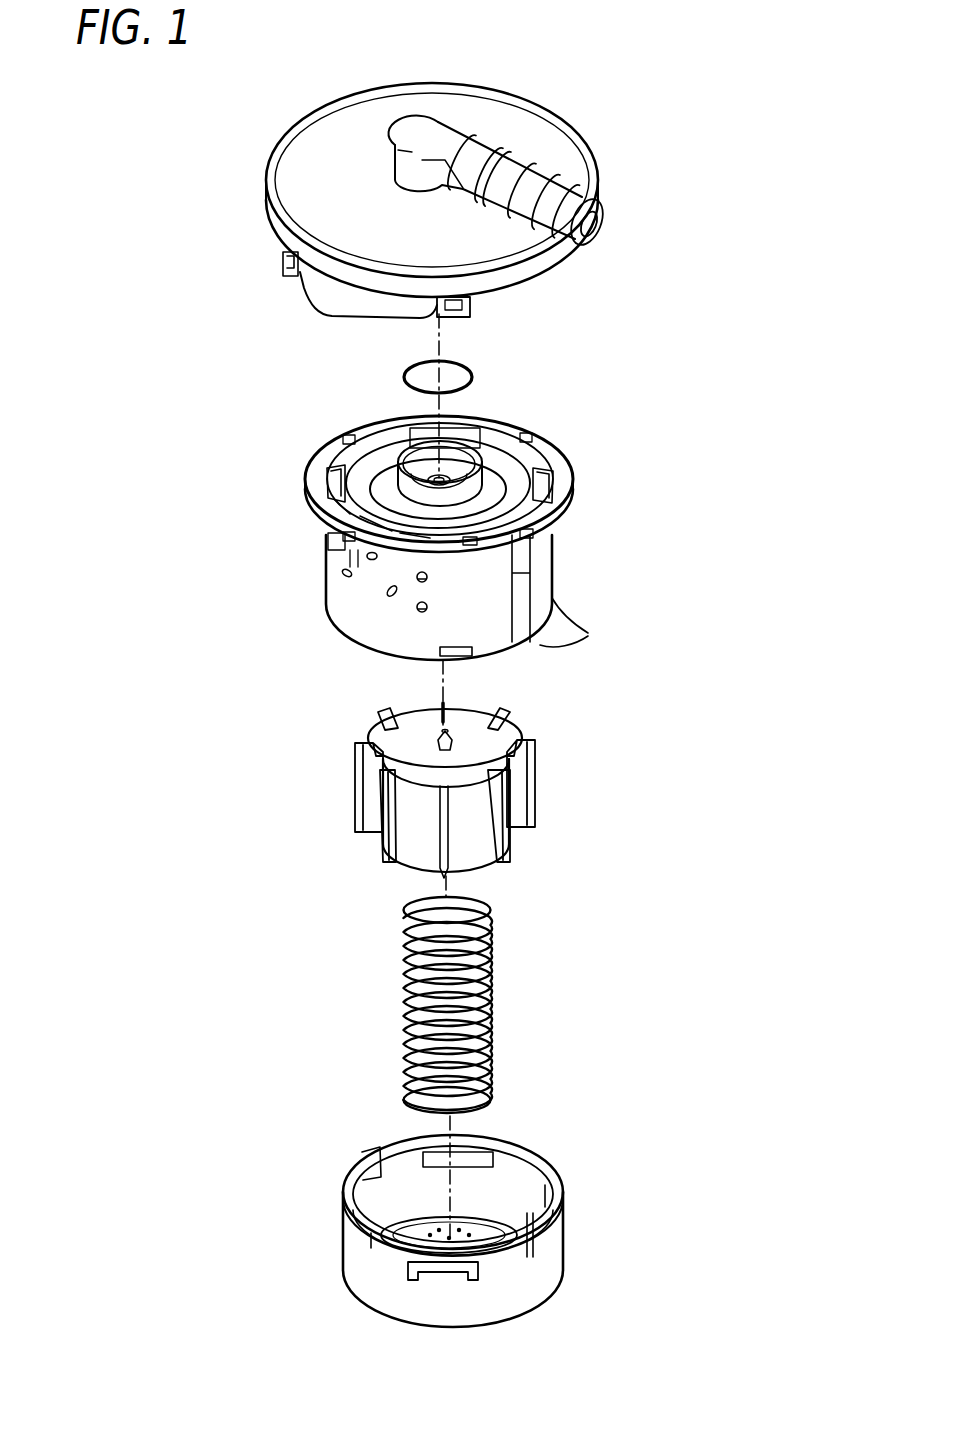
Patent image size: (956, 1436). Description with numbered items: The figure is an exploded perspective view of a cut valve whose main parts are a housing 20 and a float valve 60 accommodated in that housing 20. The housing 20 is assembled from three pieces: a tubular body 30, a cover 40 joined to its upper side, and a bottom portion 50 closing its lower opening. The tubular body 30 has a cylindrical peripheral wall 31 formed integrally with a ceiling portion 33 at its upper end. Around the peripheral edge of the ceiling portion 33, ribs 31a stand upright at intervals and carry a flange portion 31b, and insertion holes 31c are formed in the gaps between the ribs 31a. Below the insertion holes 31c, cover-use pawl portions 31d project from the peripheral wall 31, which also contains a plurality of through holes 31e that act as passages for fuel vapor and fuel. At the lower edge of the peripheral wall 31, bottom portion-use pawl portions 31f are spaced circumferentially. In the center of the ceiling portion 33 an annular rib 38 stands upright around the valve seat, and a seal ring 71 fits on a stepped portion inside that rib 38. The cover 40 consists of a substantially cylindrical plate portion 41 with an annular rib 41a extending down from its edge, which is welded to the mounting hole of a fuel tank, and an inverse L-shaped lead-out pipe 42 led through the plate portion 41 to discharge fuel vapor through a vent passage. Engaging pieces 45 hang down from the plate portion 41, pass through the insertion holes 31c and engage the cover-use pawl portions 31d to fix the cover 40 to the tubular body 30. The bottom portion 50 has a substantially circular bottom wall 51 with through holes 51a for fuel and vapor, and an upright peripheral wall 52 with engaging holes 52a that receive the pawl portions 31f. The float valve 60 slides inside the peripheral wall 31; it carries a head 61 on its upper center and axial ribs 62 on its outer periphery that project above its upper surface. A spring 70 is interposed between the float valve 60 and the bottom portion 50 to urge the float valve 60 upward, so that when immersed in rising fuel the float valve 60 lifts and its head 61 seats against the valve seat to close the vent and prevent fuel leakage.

The housing 20 is at (87, 548).
The tubular body 30 is at (260, 586).
The peripheral wall 31 is at (545, 568).
The ribs 31a is at (380, 453).
The flange portion 31b is at (563, 483).
The insertion holes 31c is at (327, 477).
The cover-use pawl portions 31d is at (350, 575).
The through holes 31e is at (420, 610).
The bottom portion-use pawl portions 31f is at (580, 635).
The ceiling portion 33 is at (517, 485).
The annular rib 38 is at (470, 485).
The cover 40 is at (240, 336).
The plate portion 41 is at (552, 133).
The annular rib 41a is at (543, 265).
The lead-out pipe 42 is at (432, 133).
The engaging pieces 45 is at (330, 315).
The bottom portion 50 is at (304, 1147).
The bottom wall 51 is at (560, 1210).
The through holes 51a is at (447, 1237).
The peripheral wall 52 is at (527, 1285).
The engaging holes 52a is at (473, 1155).
The float valve 60 is at (578, 787).
The head 61 is at (448, 737).
The ribs 62 is at (530, 760).
The spring 70 is at (518, 985).
The seal ring 71 is at (473, 375).